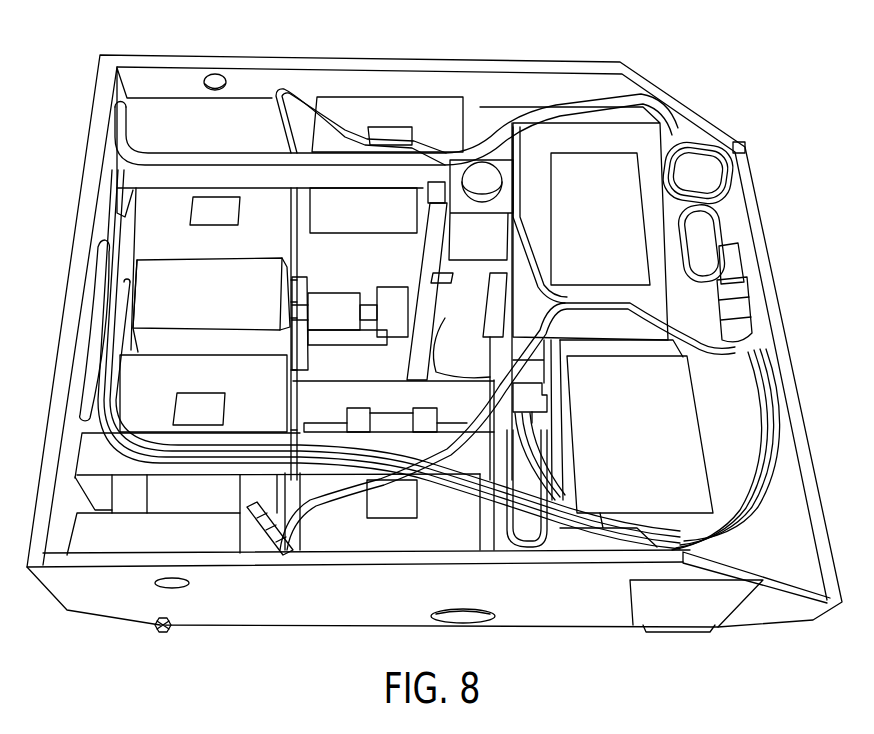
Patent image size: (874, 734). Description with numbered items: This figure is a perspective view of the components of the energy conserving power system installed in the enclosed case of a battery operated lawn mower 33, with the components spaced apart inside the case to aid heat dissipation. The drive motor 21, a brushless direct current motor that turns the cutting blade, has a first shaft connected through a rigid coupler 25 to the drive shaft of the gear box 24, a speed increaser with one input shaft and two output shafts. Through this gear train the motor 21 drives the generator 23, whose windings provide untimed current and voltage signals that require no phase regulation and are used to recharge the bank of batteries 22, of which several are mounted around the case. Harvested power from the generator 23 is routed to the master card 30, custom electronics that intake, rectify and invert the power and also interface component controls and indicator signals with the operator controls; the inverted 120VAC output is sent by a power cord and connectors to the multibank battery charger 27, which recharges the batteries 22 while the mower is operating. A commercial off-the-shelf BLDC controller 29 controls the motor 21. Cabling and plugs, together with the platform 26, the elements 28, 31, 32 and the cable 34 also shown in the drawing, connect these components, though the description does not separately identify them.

The drive motor 21 is at (203, 298).
The bank of batteries 22 is at (212, 207).
The generator 23 is at (460, 200).
The gear box 24 is at (395, 300).
The rigid coupler 25 is at (340, 308).
The mounting platform 26 is at (311, 410).
The multibank battery charger 27 is at (607, 220).
The cable 28 is at (577, 503).
The BLDC controller 29 is at (660, 530).
The master card 30 is at (633, 430).
The connector 31 is at (745, 315).
The connector 32 is at (733, 267).
The lawn mower 33 is at (470, 80).
The cable 34 is at (240, 173).